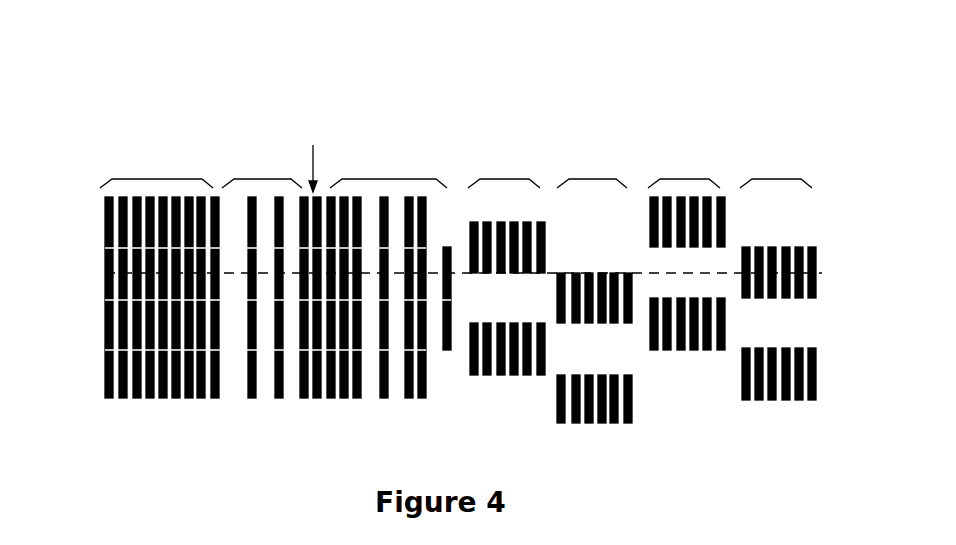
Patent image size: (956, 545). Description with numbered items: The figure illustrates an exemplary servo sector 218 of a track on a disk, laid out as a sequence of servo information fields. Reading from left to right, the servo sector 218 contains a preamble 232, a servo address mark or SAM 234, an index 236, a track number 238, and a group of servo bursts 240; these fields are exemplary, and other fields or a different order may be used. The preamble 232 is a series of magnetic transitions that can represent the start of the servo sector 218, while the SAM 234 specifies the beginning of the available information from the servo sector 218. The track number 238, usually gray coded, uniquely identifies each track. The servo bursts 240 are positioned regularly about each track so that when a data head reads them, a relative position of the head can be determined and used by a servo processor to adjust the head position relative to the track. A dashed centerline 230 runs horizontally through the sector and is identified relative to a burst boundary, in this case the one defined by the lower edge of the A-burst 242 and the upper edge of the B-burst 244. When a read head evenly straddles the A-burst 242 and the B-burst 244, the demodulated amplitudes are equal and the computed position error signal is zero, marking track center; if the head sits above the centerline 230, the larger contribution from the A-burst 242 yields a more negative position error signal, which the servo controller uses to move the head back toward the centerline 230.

The servo sector 218 is at (185, 470).
The centerline 230 is at (105, 274).
The preamble 232 is at (160, 127).
The servo address mark 234 is at (233, 125).
The index 236 is at (322, 125).
The track number 238 is at (393, 125).
The servo bursts 240 is at (596, 99).
The A-burst 242 is at (543, 232).
The B-burst 244 is at (603, 322).